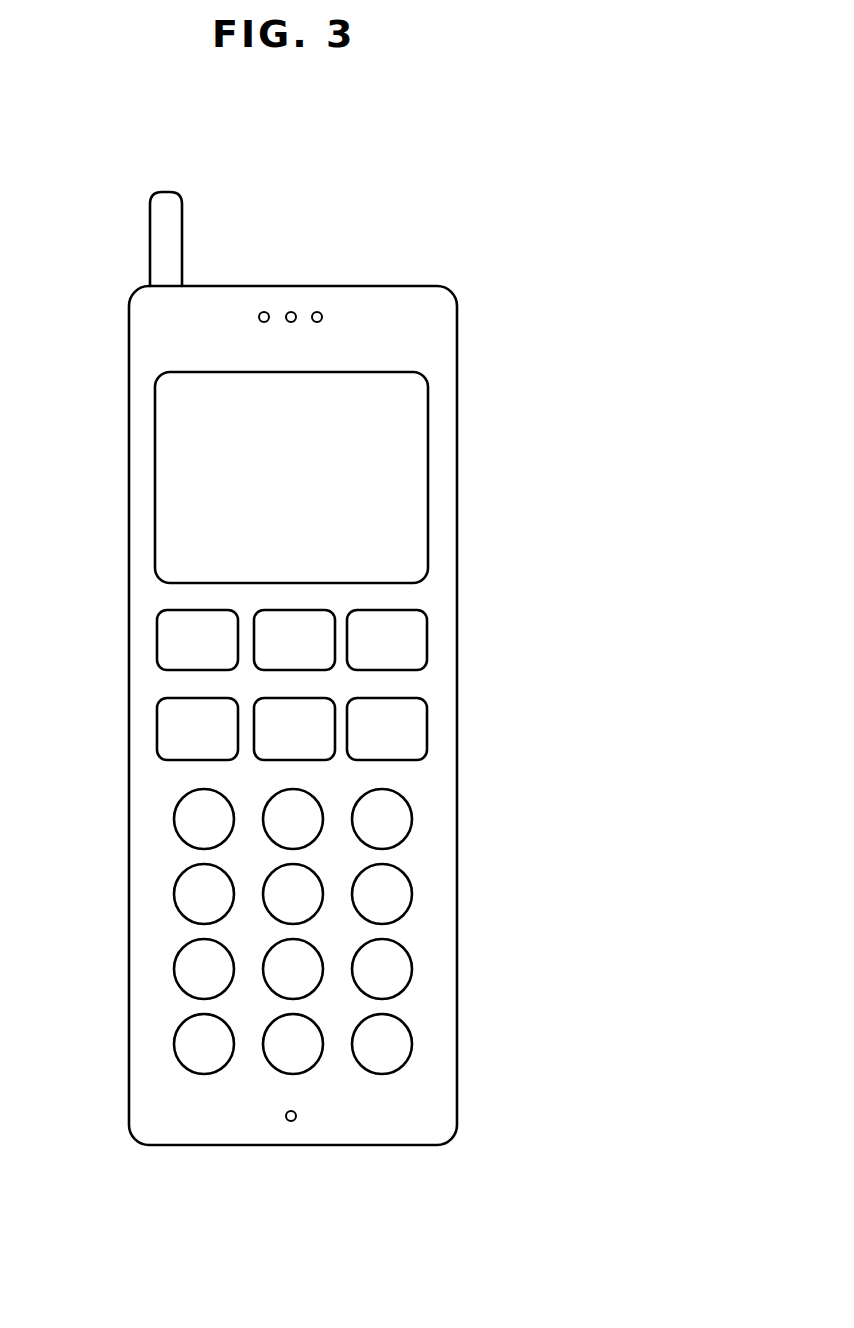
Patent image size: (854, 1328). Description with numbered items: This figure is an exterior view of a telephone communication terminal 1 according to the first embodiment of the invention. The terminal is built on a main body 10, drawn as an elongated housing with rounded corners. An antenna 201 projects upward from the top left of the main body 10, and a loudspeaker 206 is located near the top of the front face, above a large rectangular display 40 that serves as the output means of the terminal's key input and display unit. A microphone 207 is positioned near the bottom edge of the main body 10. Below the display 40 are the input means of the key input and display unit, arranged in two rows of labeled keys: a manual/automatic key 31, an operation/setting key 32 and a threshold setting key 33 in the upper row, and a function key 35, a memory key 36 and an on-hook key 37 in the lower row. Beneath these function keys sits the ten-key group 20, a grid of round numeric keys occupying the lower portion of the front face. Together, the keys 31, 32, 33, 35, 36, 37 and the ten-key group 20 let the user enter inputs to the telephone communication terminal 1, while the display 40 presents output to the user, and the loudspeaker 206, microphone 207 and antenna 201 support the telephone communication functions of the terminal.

The telephone communication terminal 1 is at (540, 614).
The main body 10 is at (457, 958).
The ten-key group 20 is at (423, 864).
The antenna 201 is at (182, 240).
The loudspeaker 206 is at (291, 311).
The microphone 207 is at (289, 1122).
The display 40 is at (318, 500).
The manual/automatic key 31 is at (157, 640).
The operation/setting key 32 is at (320, 610).
The threshold setting key 33 is at (425, 629).
The function key 35 is at (157, 727).
The memory key 36 is at (317, 698).
The on-hook key 37 is at (427, 722).